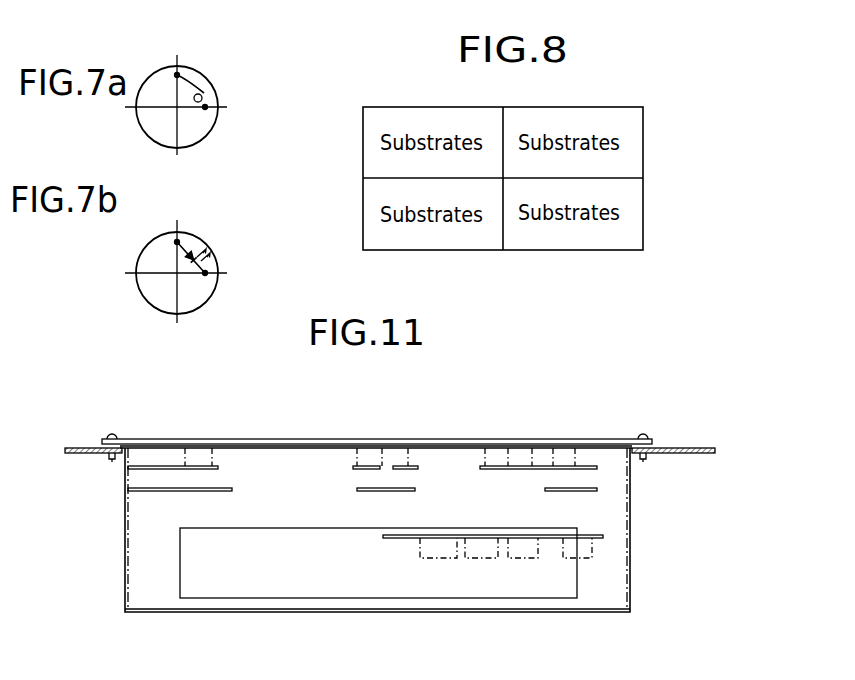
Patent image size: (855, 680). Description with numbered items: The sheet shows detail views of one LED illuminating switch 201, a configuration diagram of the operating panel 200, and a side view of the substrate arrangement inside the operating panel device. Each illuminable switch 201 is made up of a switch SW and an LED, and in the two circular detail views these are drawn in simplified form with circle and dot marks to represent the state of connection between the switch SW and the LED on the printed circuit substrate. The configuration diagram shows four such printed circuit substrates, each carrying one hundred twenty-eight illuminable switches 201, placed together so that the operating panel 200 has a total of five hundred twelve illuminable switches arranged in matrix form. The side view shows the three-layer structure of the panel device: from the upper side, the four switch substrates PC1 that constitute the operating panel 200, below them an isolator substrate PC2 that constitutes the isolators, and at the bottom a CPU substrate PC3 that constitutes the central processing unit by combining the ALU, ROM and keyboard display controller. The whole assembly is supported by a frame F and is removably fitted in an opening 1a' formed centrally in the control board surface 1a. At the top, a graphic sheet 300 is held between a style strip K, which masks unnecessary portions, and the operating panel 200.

In FIG. 7A, the switch SW is at (176, 87).
In FIG. 7B, the element LED is at (176, 254).
In FIG. 11, the graphic sheet 300 is at (472, 442).
In FIG. 11, the style strip K is at (513, 443).
In FIG. 11, the control board surface 1a is at (673, 414).
In FIG. 11, the opening 1a' is at (82, 482).
In FIG. 11, the operating panel 200 is at (583, 462).
In FIG. 11, the LED illuminating switch 201 is at (388, 456).
In FIG. 11, the switch substrate PC1 is at (597, 470).
In FIG. 11, the isolator substrate PC2 is at (597, 492).
In FIG. 11, the CPU substrate PC3 is at (603, 537).
In FIG. 11, the frame F is at (630, 595).